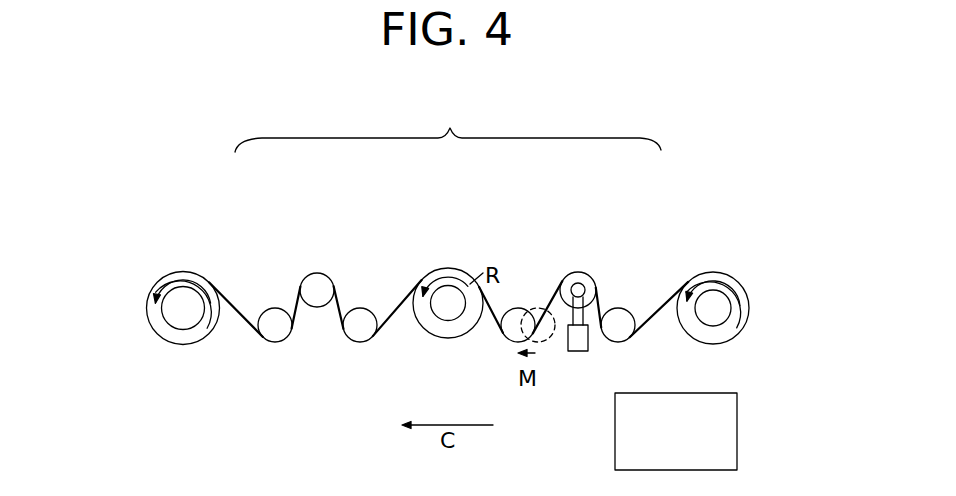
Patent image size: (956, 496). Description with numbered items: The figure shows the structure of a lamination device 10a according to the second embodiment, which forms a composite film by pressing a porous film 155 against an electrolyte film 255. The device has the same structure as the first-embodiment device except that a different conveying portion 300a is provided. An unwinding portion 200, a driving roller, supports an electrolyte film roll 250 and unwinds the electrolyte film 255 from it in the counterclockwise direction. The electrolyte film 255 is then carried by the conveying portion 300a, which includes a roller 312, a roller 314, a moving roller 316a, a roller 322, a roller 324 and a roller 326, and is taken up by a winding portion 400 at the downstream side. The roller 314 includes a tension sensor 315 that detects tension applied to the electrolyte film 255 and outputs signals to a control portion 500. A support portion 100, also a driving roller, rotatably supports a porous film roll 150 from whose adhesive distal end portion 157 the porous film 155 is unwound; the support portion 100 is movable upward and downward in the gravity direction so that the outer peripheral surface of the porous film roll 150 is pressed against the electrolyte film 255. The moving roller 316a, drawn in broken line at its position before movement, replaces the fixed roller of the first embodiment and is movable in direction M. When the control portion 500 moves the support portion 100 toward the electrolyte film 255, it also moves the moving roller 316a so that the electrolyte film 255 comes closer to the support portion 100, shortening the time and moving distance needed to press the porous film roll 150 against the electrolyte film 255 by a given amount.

The lamination device 10a is at (724, 184).
The conveying portion 300a is at (448, 128).
The winding portion 400 is at (183, 308).
The roller 326 is at (275, 308).
The roller 324 is at (317, 273).
The roller 322 is at (360, 308).
The support portion 100 is at (448, 305).
The distal end portion 157 is at (436, 272).
The porous film roll 150 is at (426, 322).
The porous film 155 is at (471, 330).
The moving roller 316a is at (518, 308).
The roller 314 is at (578, 272).
The tension sensor 315 is at (578, 352).
The roller 312 is at (620, 308).
The electrolyte film 255 is at (673, 295).
The unwinding portion 200 is at (715, 308).
The electrolyte film roll 250 is at (742, 308).
The control portion 500 is at (737, 428).